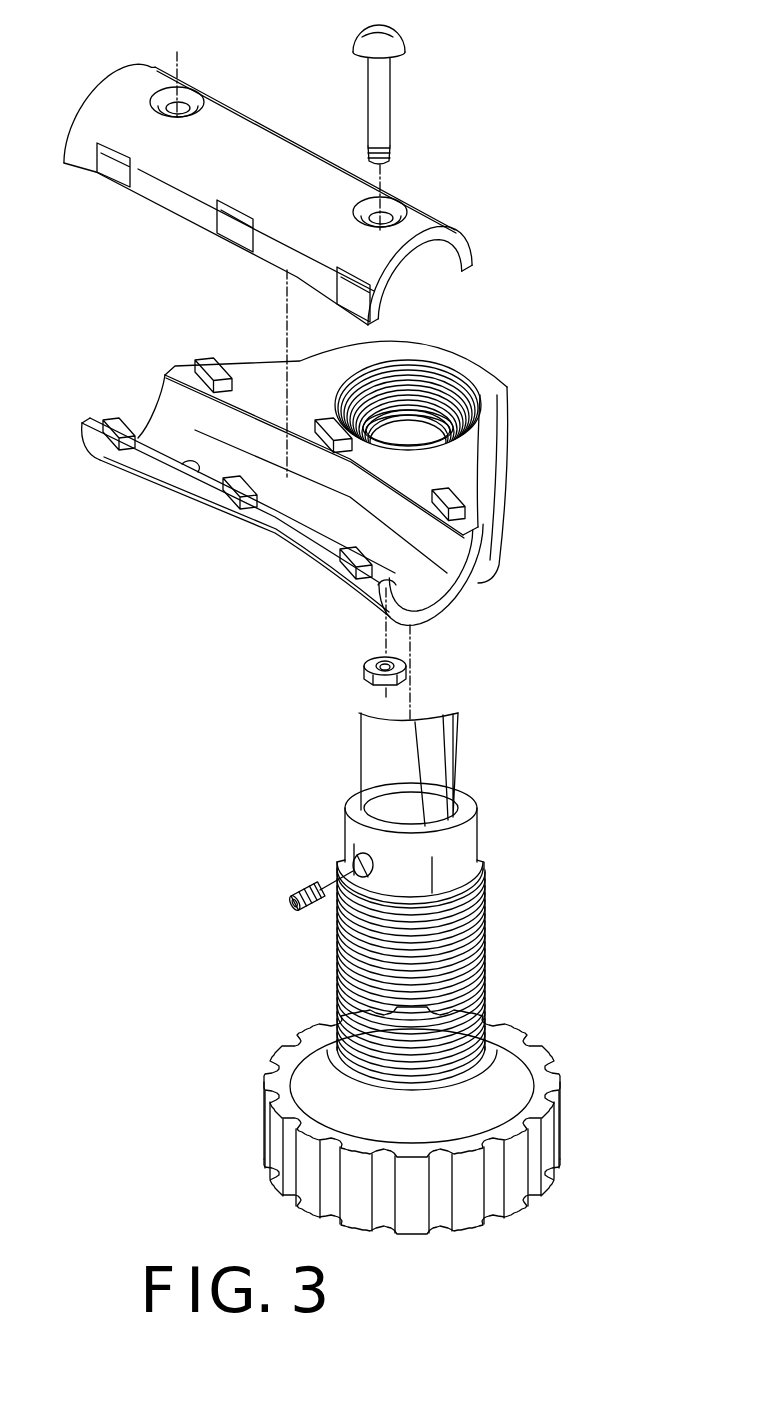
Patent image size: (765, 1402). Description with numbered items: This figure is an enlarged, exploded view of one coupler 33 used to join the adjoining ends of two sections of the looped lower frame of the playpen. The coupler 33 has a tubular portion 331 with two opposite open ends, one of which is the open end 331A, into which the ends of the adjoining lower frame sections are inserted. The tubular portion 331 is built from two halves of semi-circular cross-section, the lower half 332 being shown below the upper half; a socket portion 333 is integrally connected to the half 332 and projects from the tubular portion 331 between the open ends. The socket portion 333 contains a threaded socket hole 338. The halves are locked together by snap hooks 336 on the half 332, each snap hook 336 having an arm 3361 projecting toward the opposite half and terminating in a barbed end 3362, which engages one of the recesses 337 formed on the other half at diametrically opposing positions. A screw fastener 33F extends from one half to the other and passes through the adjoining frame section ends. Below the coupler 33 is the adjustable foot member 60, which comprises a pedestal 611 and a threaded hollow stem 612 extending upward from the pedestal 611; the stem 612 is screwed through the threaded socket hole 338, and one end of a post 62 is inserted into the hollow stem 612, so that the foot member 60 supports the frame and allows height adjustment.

The coupler 33 is at (512, 483).
The tubular portion 331 is at (427, 230).
The open end 331A is at (100, 97).
The screw fastener 33F is at (397, 40).
The recess 337 is at (237, 217).
The socket hole 338 is at (450, 397).
The socket portion 333 is at (480, 584).
The half 332 is at (305, 553).
The snap hook 336 is at (203, 516).
The arm 3361 is at (245, 500).
The barbed end 3362 is at (240, 470).
The post 62 is at (438, 752).
The adjustable foot member 60 is at (486, 823).
The threaded hollow stem 612 is at (483, 952).
The pedestal 611 is at (543, 1142).